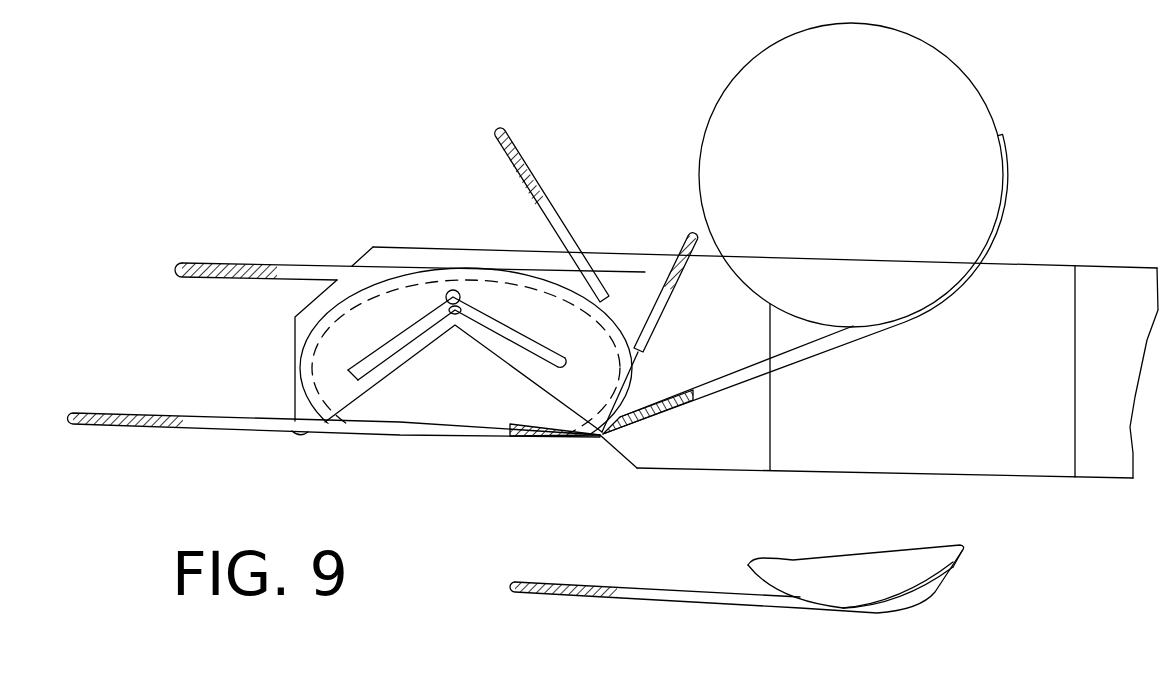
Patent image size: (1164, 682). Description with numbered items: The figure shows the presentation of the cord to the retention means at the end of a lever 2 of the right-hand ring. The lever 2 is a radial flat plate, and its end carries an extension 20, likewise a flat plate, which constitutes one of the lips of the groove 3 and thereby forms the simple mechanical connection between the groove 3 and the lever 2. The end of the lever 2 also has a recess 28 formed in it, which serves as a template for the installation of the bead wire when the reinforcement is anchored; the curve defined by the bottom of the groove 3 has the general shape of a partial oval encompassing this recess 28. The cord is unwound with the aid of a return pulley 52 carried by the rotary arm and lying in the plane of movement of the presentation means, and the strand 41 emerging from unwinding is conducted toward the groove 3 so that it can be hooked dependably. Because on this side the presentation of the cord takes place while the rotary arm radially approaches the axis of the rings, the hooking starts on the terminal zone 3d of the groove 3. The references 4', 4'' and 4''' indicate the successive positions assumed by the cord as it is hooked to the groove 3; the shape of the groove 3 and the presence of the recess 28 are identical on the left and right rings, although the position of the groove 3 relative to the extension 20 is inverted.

The lever 2 is at (1115, 389).
The extension 20 is at (1020, 466).
The return pulley 52 is at (862, 103).
The strand 41 is at (680, 404).
The groove 3 is at (306, 346).
The terminal zone 3d is at (600, 436).
The recess 28 is at (447, 398).
The position of the cord 4''' is at (256, 236).
The position of the cord 4'' is at (552, 202).
The position of the cord 4' is at (666, 270).